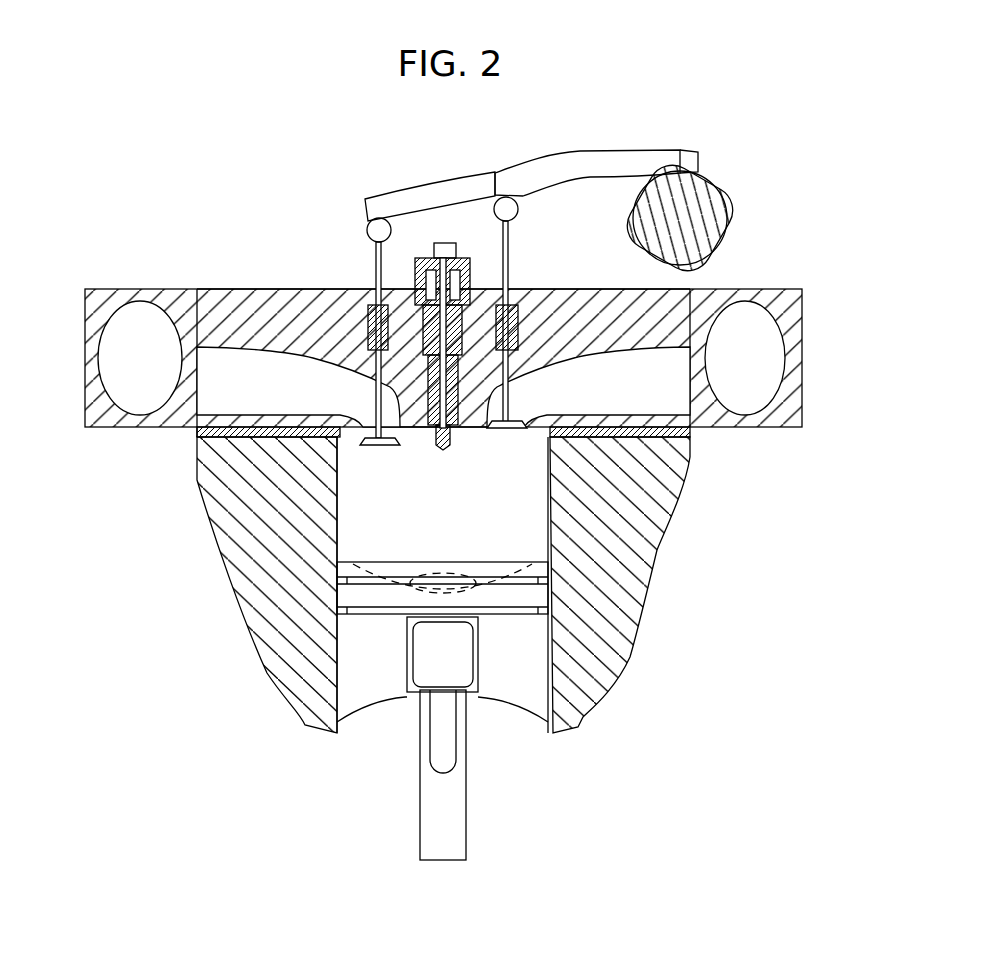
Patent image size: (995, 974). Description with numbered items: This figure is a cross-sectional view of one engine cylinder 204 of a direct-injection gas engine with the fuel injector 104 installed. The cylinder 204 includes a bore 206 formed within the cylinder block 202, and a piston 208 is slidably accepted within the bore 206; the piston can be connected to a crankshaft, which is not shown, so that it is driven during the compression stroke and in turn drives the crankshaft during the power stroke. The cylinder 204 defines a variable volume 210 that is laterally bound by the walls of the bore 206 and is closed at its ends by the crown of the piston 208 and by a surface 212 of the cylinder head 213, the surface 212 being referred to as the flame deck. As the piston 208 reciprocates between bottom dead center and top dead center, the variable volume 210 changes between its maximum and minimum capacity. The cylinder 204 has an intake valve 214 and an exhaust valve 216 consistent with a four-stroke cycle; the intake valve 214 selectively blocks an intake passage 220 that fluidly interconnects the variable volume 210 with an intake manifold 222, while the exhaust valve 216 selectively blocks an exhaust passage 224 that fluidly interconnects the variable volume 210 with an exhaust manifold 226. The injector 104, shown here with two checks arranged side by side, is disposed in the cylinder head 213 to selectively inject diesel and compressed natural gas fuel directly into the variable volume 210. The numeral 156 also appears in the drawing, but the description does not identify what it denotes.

The injector 104 is at (461, 236).
The cylinder head 156 is at (556, 295).
The cylinder block 202 is at (640, 530).
The engine cylinder 204 is at (224, 651).
The bore 206 is at (541, 504).
The piston 208 is at (518, 682).
The variable volume 210 is at (357, 545).
The surface of the cylinder head 212 is at (415, 436).
The cylinder head 213 is at (634, 307).
The intake valve 214 is at (364, 427).
The exhaust valve 216 is at (533, 400).
The intake passage 220 is at (219, 368).
The intake manifold 222 is at (127, 332).
The exhaust passage 224 is at (665, 400).
The exhaust manifold 226 is at (751, 338).